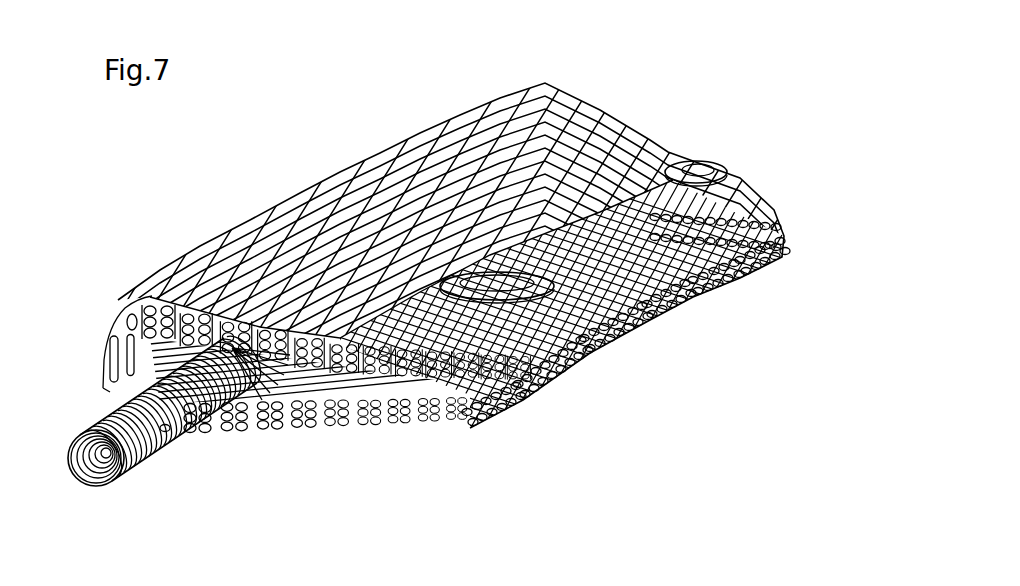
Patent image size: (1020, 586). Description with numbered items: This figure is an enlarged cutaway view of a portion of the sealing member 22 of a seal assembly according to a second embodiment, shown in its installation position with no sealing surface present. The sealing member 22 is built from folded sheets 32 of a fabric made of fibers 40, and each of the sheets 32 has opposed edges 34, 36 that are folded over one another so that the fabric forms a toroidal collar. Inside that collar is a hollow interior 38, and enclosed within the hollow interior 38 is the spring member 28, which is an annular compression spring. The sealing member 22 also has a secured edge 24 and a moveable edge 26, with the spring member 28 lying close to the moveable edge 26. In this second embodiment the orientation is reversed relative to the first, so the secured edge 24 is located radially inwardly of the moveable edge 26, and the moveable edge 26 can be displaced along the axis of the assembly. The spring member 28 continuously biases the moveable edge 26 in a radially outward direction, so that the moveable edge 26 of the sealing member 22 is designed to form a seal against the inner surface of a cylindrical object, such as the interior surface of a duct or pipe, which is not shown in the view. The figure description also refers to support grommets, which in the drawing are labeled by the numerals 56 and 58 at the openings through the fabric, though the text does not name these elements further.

The sealing member 22 is at (378, 152).
The secured edge 24 is at (747, 273).
The moveable edge 26 is at (103, 353).
The spring member 28 is at (125, 460).
The folded sheets 32 is at (317, 427).
The opposed edge 34 is at (688, 295).
The opposed edge 36 is at (540, 380).
The hollow interior 38 is at (247, 385).
The fibers 40 is at (277, 247).
The opening 56 is at (713, 168).
The grommet ring 58 is at (593, 347).